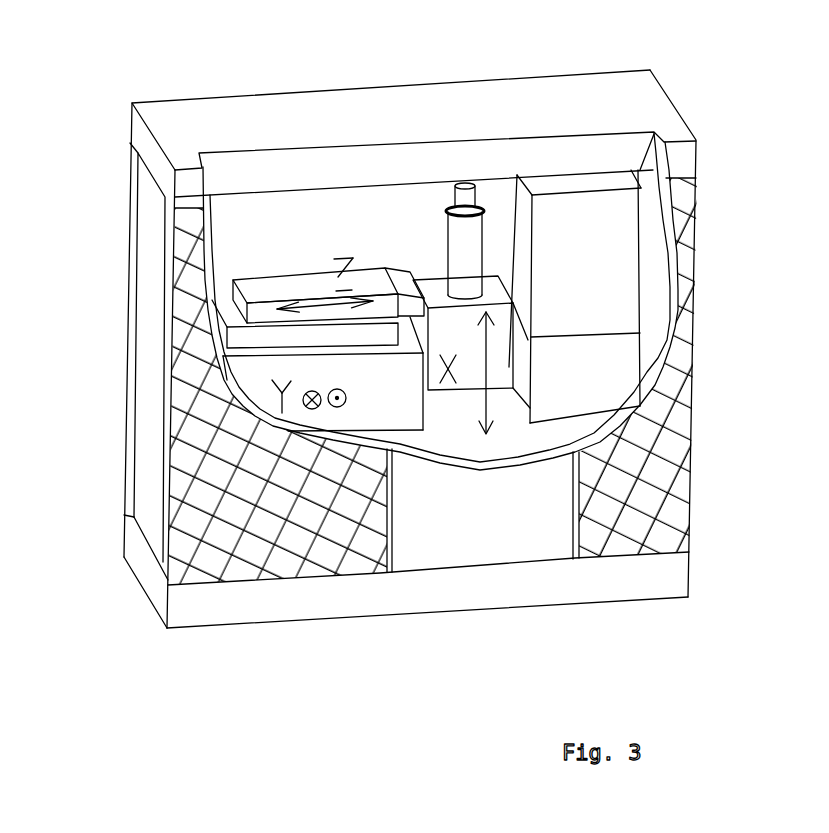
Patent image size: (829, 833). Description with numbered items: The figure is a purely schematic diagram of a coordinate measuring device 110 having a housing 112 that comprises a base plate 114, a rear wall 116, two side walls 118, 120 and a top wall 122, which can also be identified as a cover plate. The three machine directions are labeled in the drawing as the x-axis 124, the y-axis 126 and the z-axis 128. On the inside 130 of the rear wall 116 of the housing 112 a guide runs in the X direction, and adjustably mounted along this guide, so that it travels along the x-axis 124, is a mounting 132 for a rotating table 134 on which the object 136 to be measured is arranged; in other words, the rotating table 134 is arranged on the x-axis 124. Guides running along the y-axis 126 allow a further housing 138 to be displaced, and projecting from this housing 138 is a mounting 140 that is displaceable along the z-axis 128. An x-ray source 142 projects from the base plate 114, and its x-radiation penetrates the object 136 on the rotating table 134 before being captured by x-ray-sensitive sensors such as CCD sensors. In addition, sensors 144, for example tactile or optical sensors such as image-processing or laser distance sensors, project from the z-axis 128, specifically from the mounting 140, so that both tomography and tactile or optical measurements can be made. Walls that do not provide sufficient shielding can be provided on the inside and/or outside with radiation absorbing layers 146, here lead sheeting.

The coordinate measuring device 110 is at (195, 79).
The housing 112 is at (226, 132).
The base plate 114 is at (470, 590).
The rear wall 116 is at (128, 430).
The side wall 118 is at (145, 503).
The side wall 120 is at (693, 302).
The top wall 122 is at (623, 97).
The x-axis 124 is at (455, 395).
The y-axis 126 is at (312, 378).
The z-axis 128 is at (327, 262).
The inside of the rear wall 130 is at (305, 275).
The mounting 132 is at (494, 392).
The rotating table 134 is at (463, 250).
The object 136 is at (458, 182).
The housing 138 is at (347, 392).
The mounting 140 is at (288, 266).
The x-ray source 142 is at (688, 392).
The sensors 144 is at (410, 272).
The radiation absorbing layers 146 is at (280, 548).